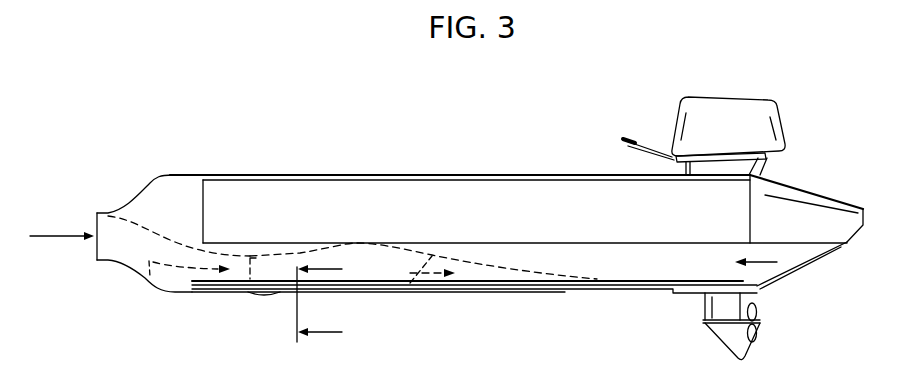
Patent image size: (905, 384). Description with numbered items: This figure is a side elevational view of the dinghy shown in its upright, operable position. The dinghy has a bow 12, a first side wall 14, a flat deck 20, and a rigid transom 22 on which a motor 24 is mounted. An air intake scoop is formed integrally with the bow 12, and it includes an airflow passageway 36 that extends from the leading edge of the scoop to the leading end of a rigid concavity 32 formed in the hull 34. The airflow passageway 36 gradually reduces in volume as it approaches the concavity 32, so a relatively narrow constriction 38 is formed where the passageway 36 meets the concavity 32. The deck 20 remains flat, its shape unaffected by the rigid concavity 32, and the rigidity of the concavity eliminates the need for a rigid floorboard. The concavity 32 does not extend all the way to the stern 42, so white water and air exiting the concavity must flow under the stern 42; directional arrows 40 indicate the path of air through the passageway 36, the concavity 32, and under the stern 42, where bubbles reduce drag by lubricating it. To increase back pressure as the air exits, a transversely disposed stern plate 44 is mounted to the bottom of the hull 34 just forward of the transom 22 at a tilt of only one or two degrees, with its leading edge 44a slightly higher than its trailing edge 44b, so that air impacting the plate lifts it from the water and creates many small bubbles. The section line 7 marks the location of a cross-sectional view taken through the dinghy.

The section line 7- 7 is at (327, 302).
The bow 12 is at (167, 185).
The first side wall 14 is at (436, 174).
The deck 20 is at (315, 241).
The rigid transom 22 is at (747, 196).
The motor 24 is at (707, 103).
The concavity 32 is at (418, 293).
The hull 34 is at (613, 262).
The airflow passageway 36 is at (145, 262).
The constriction 38 is at (232, 295).
The directional arrows 40 is at (187, 265).
The stern 42 is at (778, 263).
The stern plate 44 is at (628, 292).
The leading edge 44a is at (565, 289).
The trailing edge 44b is at (674, 292).